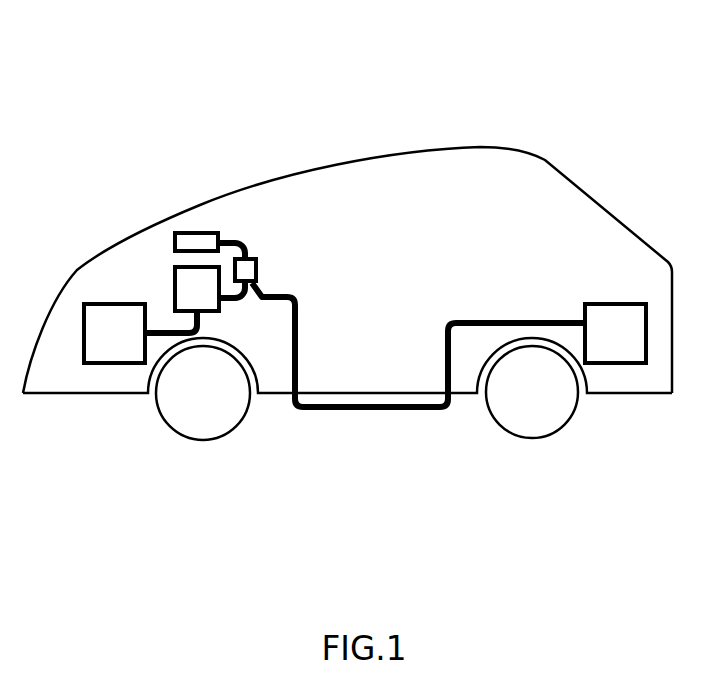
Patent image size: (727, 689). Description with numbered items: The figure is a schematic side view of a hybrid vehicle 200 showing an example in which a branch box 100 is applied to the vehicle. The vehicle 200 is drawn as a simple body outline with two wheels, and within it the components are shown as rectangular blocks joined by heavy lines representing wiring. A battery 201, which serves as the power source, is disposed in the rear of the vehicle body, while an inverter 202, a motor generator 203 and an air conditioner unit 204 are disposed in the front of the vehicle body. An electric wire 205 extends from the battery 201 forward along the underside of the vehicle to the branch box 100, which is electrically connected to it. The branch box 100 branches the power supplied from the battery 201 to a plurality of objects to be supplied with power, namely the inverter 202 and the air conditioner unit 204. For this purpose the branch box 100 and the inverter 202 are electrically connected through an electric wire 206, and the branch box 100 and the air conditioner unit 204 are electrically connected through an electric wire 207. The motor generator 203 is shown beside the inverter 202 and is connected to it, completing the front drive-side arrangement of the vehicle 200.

The hybrid vehicle 200 is at (107, 80).
The branch box 100 is at (270, 263).
The battery 201 is at (615, 365).
The inverter 202 is at (173, 282).
The motor generator 203 is at (88, 302).
The air conditioner unit 204 is at (182, 231).
The electric wire 205 is at (432, 410).
The electric wire 206 is at (243, 297).
The electric wire 207 is at (236, 240).